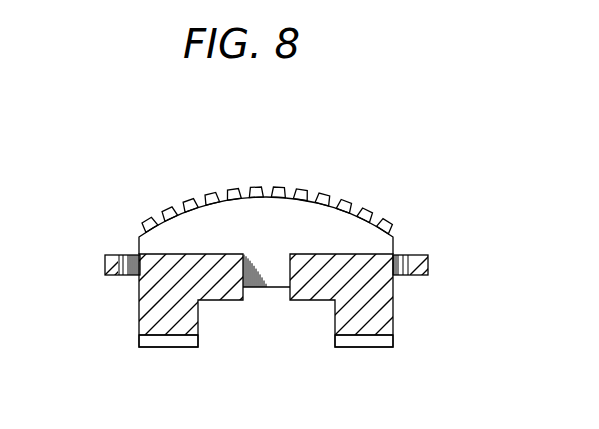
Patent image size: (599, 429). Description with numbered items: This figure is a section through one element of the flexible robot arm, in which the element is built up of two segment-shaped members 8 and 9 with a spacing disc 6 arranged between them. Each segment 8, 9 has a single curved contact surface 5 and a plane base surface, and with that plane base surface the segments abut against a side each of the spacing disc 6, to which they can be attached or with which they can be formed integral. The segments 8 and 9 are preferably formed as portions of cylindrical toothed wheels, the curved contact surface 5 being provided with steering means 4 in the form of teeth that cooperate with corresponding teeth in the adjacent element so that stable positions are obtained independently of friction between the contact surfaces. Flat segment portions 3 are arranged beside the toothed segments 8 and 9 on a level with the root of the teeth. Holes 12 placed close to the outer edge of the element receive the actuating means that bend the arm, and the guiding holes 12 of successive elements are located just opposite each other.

The flat segment portion 3 is at (333, 204).
The steering means 4 is at (233, 190).
The curved contact surface 5 is at (189, 199).
The segment-shaped member 8 is at (283, 184).
The spacing disc 6 is at (428, 261).
The segment-shaped member 9 is at (170, 339).
The hole 12 is at (128, 262).